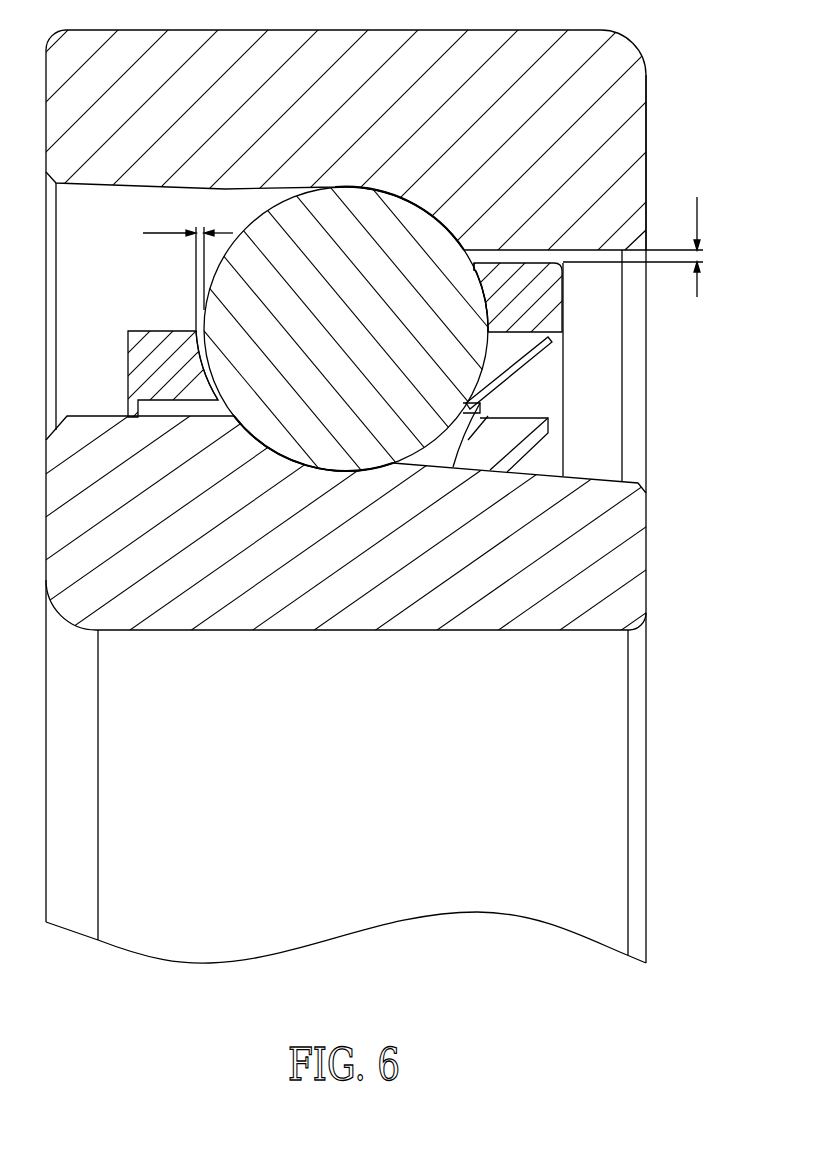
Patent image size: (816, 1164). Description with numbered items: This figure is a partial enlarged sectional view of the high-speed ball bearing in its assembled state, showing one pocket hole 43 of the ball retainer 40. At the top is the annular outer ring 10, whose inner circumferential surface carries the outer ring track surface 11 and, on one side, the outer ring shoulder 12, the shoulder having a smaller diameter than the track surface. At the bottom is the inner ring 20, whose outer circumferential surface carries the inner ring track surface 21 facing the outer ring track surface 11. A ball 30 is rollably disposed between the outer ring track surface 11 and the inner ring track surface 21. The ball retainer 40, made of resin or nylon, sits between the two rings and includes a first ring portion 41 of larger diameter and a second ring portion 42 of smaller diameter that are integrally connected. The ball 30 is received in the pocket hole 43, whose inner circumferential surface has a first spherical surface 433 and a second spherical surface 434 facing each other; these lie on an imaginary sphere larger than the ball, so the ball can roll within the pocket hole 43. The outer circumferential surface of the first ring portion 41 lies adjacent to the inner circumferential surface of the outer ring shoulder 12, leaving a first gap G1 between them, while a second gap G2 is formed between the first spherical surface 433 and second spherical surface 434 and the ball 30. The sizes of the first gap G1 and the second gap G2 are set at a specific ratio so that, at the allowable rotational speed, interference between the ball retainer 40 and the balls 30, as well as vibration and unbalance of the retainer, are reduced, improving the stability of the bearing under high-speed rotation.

The outer ring 10 is at (621, 47).
The outer ring track surface 11 is at (413, 202).
The outer ring shoulder 12 is at (625, 133).
The inner ring 20 is at (638, 556).
The inner ring track surface 21 is at (287, 462).
The ball 30 is at (472, 387).
The ball retainer 40 is at (556, 303).
The first ring portion 41 is at (540, 287).
The second ring portion 42 is at (158, 367).
The pocket hole 43 is at (482, 270).
The first spherical surface 433 is at (498, 298).
The second spherical surface 434 is at (188, 355).
The first gap G1 is at (633, 247).
The second gap G2 is at (188, 268).